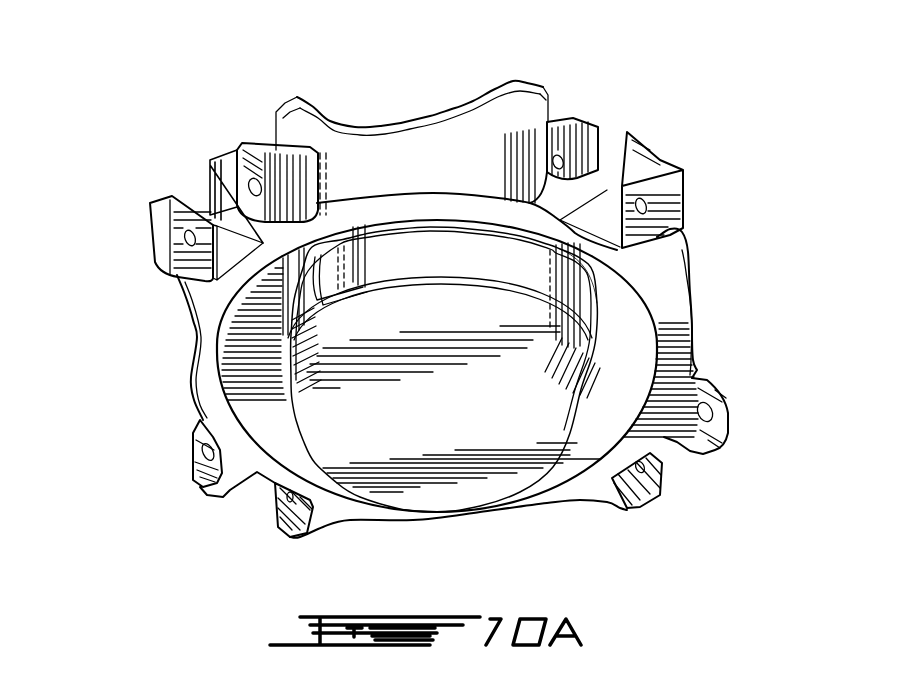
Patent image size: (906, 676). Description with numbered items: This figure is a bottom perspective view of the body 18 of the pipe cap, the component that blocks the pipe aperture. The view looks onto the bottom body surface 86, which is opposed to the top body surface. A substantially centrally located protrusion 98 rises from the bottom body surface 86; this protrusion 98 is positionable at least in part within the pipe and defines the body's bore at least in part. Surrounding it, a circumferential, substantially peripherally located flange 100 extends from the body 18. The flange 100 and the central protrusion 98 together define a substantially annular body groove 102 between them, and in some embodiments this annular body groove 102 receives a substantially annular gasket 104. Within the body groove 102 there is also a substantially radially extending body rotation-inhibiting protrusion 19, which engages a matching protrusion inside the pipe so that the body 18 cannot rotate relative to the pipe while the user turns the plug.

The body 18 is at (148, 128).
The body rotation-inhibiting protrusion 19 is at (310, 287).
The bottom body surface 86 is at (620, 303).
The protrusion 98 is at (437, 430).
The flange 100 is at (693, 312).
The annular body groove 102 is at (613, 393).
The gasket 104 is at (630, 500).